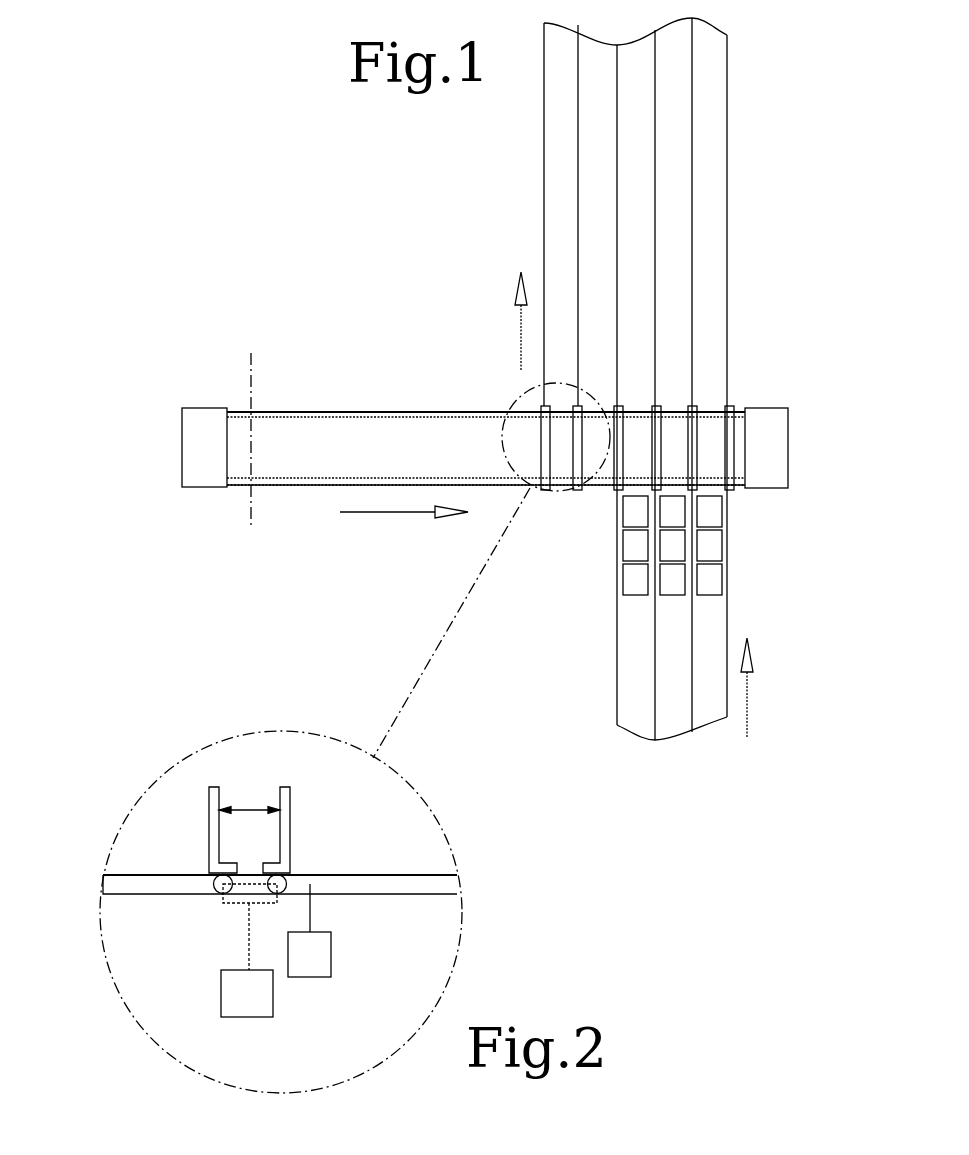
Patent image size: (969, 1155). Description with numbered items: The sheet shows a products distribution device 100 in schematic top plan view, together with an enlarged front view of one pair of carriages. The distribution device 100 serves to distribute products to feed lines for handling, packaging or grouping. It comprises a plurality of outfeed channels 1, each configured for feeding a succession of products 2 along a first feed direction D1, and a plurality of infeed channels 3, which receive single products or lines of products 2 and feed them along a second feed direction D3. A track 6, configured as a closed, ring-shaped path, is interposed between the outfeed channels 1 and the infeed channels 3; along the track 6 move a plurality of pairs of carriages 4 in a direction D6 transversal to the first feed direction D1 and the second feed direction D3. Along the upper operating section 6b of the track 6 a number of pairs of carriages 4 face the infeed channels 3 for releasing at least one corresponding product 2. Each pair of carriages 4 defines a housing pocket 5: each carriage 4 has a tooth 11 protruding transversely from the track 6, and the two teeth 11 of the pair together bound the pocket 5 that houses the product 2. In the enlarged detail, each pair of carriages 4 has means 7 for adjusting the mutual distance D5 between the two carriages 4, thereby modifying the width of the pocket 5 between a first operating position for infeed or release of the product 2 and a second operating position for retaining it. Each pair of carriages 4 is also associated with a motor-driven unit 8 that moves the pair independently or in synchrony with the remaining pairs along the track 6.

In FIG. 1, the products distribution device 100 is at (352, 204).
In FIG. 1, the outfeed channel 1 is at (748, 582).
In FIG. 1, the product 2 is at (633, 545).
In FIG. 1, the infeed channel 3 is at (743, 207).
In FIG. 1, the carriage 4 is at (558, 452).
In FIG. 2, the carriage 4 is at (197, 845).
In FIG. 1, the housing pocket 5 is at (709, 432).
In FIG. 2, the housing pocket 5 is at (262, 846).
In FIG. 1, the track 6 is at (384, 440).
In FIG. 2, the track 6 is at (175, 880).
In FIG. 1, the upper operating section 6b is at (307, 440).
In FIG. 2, the upper operating section 6b is at (408, 870).
In FIG. 2, the means for adjusting the mutual distance 7 is at (309, 930).
In FIG. 2, the motor-driven unit 8 is at (250, 946).
In FIG. 2, the tooth 11 is at (218, 810).
In FIG. 1, the first feed direction D1 is at (747, 703).
In FIG. 1, the second feed direction D3 is at (521, 341).
In FIG. 2, the mutual distance D5 is at (250, 810).
In FIG. 1, the track movement direction D6 is at (389, 512).